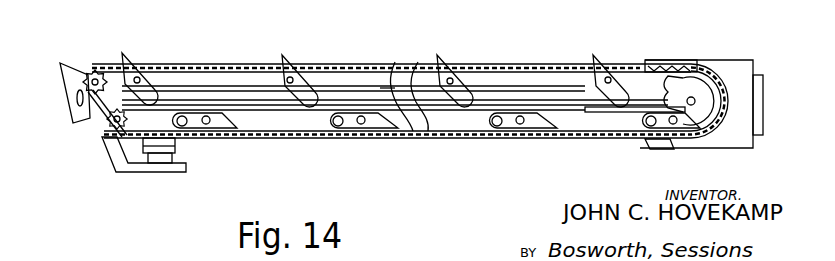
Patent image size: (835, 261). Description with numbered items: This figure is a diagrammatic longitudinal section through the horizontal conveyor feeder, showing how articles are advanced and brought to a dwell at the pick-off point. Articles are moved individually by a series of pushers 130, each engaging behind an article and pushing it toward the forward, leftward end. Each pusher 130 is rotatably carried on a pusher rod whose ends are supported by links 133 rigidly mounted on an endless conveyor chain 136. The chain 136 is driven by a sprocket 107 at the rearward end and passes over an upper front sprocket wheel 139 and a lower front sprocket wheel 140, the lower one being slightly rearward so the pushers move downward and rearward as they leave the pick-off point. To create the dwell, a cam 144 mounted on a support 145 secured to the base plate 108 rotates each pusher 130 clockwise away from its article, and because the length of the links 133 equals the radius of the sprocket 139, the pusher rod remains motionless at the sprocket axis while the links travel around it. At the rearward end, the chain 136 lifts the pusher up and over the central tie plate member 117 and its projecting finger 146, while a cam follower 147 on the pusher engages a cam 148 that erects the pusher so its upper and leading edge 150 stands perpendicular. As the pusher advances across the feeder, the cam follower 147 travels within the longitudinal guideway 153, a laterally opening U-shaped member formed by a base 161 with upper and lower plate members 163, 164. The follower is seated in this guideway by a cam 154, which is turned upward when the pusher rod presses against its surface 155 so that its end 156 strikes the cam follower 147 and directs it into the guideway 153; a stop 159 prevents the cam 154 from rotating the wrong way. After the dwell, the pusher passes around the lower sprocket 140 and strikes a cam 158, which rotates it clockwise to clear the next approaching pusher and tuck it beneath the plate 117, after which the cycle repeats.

The sprocket 107 is at (727, 100).
The base plate 108 is at (159, 163).
The central tie plate member 117 is at (285, 107).
The pusher 130 is at (139, 65).
The link 133 is at (300, 68).
The conveyor chain 136 is at (182, 65).
The upper front sprocket wheel 139 is at (100, 72).
The lower front sprocket wheel 140 is at (104, 140).
The cam 144 is at (73, 112).
The support 145 is at (98, 130).
The projection or finger 146 is at (610, 117).
The cam follower 147 is at (478, 90).
The cam 148 is at (733, 142).
The upper and leading edge 150 is at (593, 58).
The guideway 153 is at (202, 98).
The cam 154 is at (673, 64).
The surface 155 is at (673, 88).
The end 156 is at (695, 63).
The cam 158 is at (152, 145).
The stop 159 is at (665, 58).
The base 161 is at (385, 97).
The upper plate member 163 is at (367, 90).
The lower plate member 164 is at (418, 100).